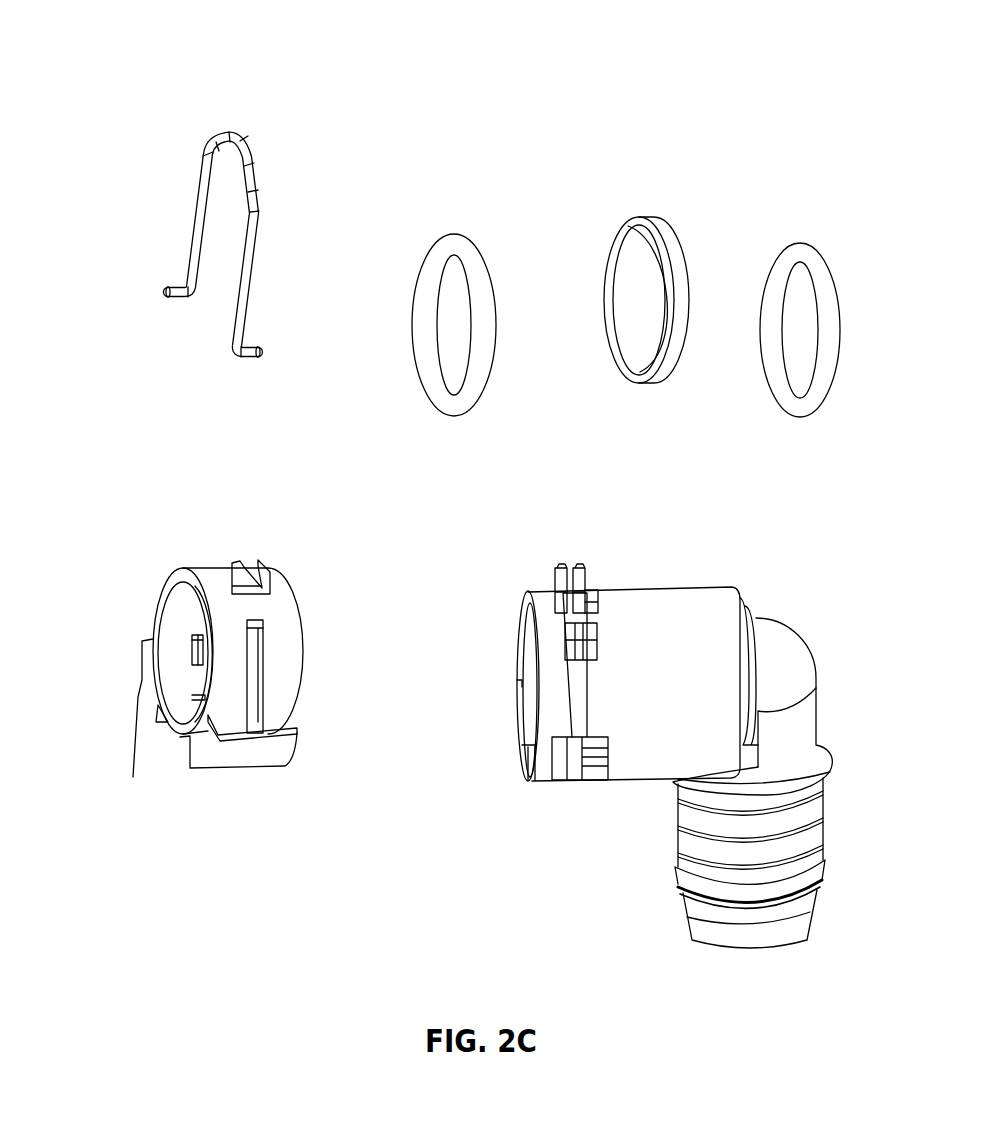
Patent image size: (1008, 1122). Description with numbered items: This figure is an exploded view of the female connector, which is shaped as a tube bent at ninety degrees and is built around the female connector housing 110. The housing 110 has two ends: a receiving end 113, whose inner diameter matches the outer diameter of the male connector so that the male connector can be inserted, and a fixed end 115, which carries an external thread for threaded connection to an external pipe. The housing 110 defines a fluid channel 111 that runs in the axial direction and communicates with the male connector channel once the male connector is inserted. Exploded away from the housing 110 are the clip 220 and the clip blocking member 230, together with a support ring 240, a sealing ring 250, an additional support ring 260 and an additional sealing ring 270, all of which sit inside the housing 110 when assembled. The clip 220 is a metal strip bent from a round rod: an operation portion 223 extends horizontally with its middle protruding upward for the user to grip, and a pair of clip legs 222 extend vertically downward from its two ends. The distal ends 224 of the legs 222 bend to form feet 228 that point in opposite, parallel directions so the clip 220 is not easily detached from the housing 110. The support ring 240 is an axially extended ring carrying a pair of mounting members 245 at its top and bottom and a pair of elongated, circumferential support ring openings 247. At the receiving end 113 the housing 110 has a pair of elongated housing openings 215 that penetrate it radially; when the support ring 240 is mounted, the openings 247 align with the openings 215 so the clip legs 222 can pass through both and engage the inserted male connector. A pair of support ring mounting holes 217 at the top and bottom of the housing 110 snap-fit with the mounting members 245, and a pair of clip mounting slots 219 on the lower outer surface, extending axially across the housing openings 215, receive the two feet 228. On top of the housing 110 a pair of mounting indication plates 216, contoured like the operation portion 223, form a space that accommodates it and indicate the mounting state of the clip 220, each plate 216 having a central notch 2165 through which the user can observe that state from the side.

The female connector housing 110 is at (673, 740).
The fluid channel 111 is at (532, 713).
The receiving end 113 is at (527, 600).
The fixed end 115 is at (740, 930).
The housing opening 215 is at (592, 703).
The mounting indication plate 216 is at (586, 570).
The notch 2165 is at (560, 568).
The support ring mounting hole 217 is at (628, 606).
The clip mounting slot 219 is at (603, 747).
The clip 220 is at (207, 225).
The clip leg 222 is at (197, 215).
The operation portion 223 is at (253, 185).
The distal end 224 is at (140, 283).
The foot 228 is at (165, 300).
The clip blocking member 230 is at (225, 768).
The support ring 240 is at (232, 639).
The mounting member 245 is at (240, 560).
The support ring opening 247 is at (197, 615).
The sealing ring 250 is at (460, 243).
The additional support ring 260 is at (655, 225).
The additional sealing ring 270 is at (800, 250).